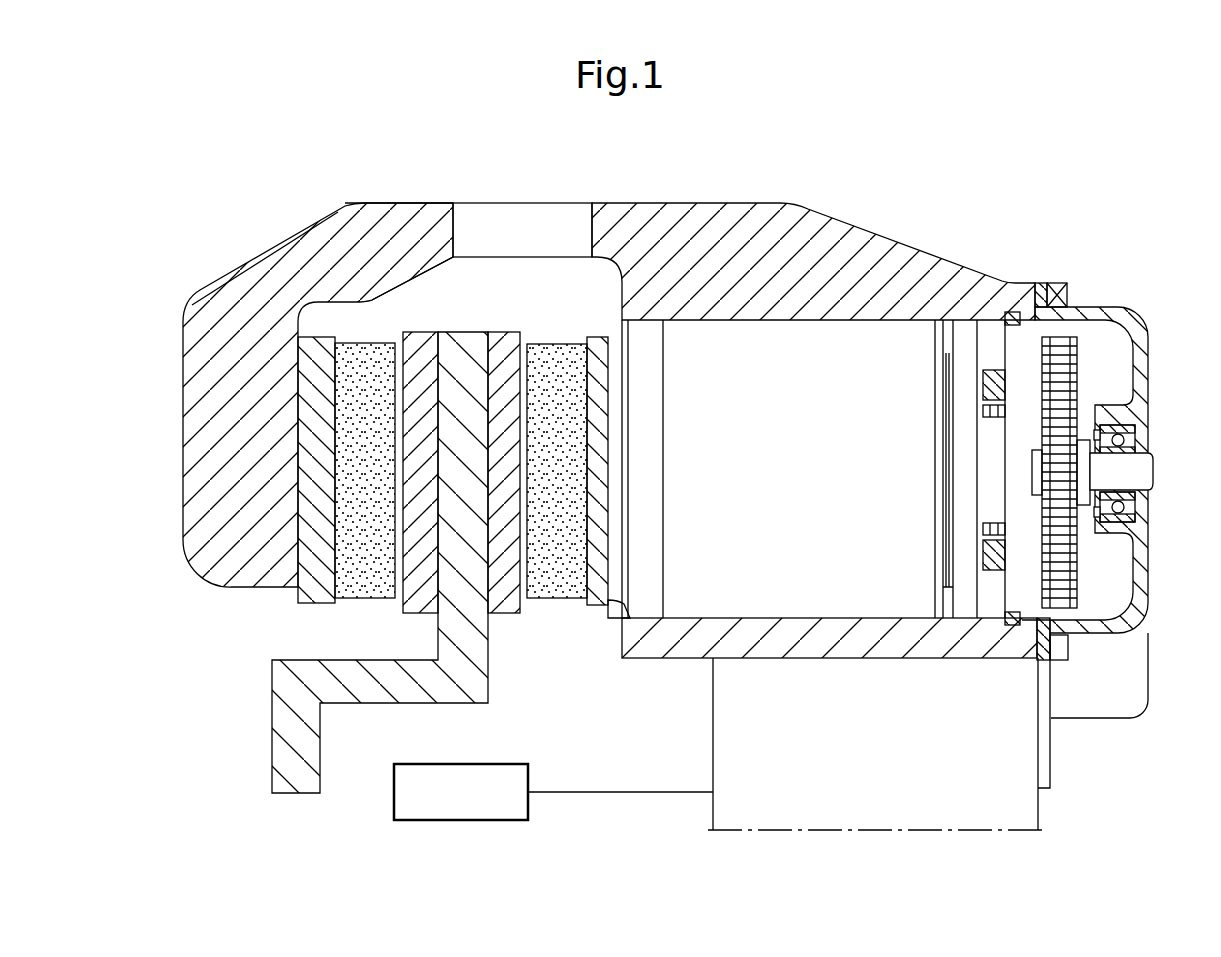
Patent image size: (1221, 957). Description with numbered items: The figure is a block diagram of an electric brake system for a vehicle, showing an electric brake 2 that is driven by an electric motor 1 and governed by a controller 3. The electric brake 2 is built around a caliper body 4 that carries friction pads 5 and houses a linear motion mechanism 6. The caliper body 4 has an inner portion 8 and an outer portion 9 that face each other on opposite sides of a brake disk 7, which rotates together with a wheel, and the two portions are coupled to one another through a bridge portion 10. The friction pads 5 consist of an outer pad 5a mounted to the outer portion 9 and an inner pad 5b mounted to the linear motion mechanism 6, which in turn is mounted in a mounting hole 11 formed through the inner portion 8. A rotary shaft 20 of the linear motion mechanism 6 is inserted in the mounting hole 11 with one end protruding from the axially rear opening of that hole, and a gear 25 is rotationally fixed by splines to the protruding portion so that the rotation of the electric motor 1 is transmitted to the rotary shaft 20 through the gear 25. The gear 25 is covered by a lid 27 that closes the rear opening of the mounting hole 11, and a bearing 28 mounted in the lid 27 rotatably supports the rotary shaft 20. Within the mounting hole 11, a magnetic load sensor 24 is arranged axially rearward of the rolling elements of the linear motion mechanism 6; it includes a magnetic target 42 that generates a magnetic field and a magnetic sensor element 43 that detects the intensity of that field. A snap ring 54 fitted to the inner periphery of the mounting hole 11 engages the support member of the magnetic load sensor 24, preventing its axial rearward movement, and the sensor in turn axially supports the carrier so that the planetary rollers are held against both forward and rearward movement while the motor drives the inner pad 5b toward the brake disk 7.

The electric motor 1 is at (1030, 803).
The electric brake 2 is at (918, 225).
The controller 3 is at (425, 822).
The caliper body 4 is at (648, 204).
The friction pads 5 is at (461, 429).
The outer pad 5a is at (378, 352).
The inner pad 5b is at (556, 352).
The linear motion mechanism 6 is at (812, 485).
The brake disk 7 is at (278, 737).
The inner portion 8 is at (650, 636).
The outer portion 9 is at (190, 387).
The bridge portion 10 is at (408, 206).
The mounting hole 11 is at (611, 616).
The rotary shaft 20 is at (1140, 480).
The magnetic load sensor 24 is at (1021, 368).
The gear 25 is at (1062, 375).
The lid 27 is at (1150, 360).
The bearing 28 is at (1138, 441).
The magnetic target 42 is at (994, 414).
The magnetic sensor element 43 is at (994, 400).
The snap ring 54 is at (1012, 311).